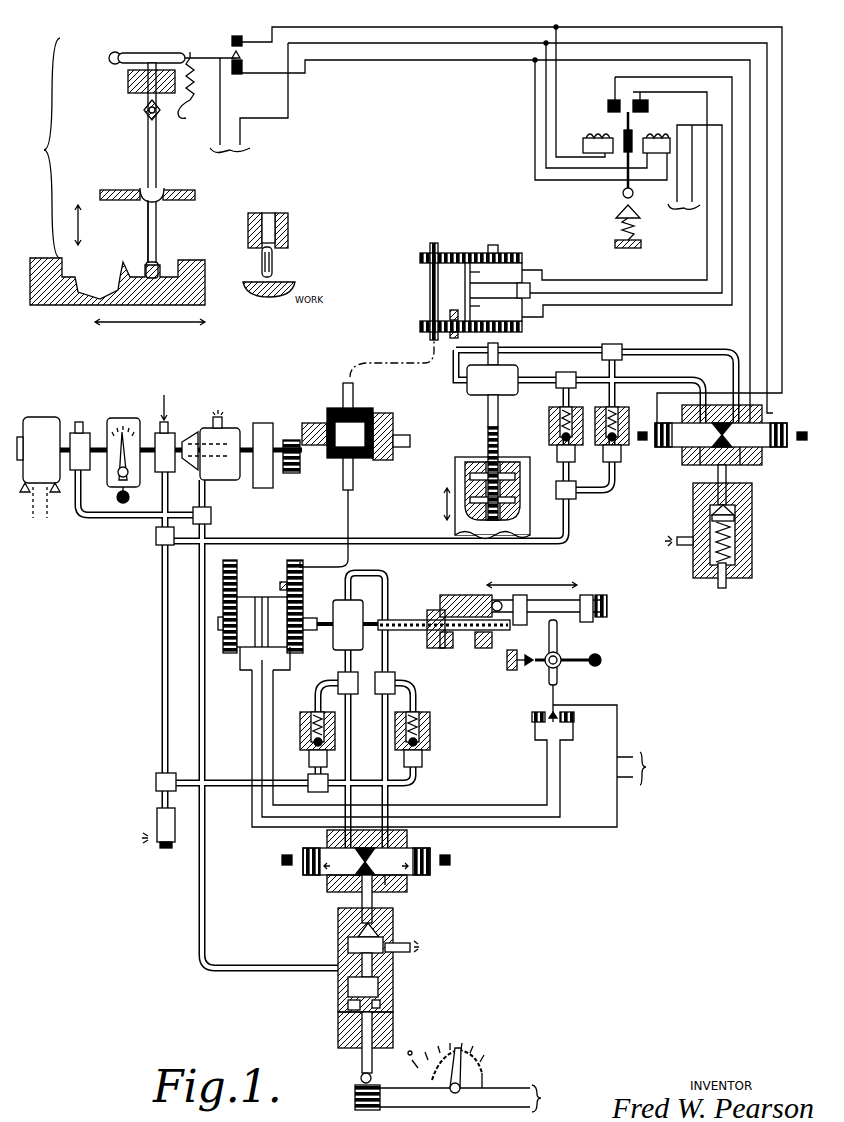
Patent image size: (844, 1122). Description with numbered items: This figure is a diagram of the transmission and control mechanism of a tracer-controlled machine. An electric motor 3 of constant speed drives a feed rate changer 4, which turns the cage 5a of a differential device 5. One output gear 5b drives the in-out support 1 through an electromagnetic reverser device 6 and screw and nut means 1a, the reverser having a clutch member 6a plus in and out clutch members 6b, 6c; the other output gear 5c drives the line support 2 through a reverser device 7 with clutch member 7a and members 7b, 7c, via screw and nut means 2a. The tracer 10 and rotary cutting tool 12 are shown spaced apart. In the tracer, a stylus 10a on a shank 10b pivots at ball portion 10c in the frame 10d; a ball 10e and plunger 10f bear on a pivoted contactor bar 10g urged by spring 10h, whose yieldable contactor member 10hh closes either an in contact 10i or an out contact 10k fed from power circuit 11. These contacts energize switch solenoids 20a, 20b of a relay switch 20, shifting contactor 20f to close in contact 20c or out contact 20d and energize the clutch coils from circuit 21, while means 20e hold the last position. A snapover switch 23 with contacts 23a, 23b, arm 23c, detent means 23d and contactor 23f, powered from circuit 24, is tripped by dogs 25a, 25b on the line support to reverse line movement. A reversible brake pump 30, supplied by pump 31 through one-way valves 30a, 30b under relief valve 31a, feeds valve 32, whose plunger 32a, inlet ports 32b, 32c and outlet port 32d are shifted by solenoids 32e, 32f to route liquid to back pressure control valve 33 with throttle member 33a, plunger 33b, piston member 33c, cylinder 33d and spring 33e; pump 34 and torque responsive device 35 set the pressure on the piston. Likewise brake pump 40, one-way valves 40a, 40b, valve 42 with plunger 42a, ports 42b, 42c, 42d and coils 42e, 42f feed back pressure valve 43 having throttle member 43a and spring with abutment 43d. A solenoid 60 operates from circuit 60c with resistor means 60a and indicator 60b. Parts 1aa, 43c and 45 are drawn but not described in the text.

The in-out support 1 is at (479, 476).
The screw and nut means 1a is at (488, 435).
The valve stem cap 1aa is at (492, 245).
The line support 2 is at (511, 607).
The screw and nut means 2a is at (420, 612).
The electric motor 3 is at (40, 418).
The feed rate changer 4 is at (125, 418).
The differential device 5 is at (356, 434).
The cage 5a is at (305, 422).
The output gear 5b is at (356, 403).
The output gear 5c is at (355, 460).
The electromagnetic reverser device 6 is at (475, 286).
The clutch member 6a is at (470, 292).
The in clutch member 6b is at (472, 272).
The out clutch member 6c is at (470, 306).
The electromagnetic reverser device 7 is at (254, 606).
The clutch member 7a is at (265, 600).
The clutch member 7b is at (247, 600).
The clutch member 7c is at (270, 600).
The tracer 10 is at (149, 179).
The stylus 10a is at (158, 262).
The shank 10b is at (160, 238).
The ball form pivot portion 10c is at (160, 200).
The tracer frame 10d is at (128, 80).
The ball 10e is at (146, 113).
The plunger 10f is at (146, 100).
The pivoted contactor bar 10g is at (153, 53).
The spring 10h is at (192, 97).
The yieldable contactor member 10hh is at (192, 55).
The in contact 10i is at (243, 68).
The out contact 10k is at (243, 42).
The power circuit 11 is at (230, 164).
The rotary cutting tool 12 is at (276, 275).
The relay switch 20 is at (617, 161).
The switch solenoid 20a is at (645, 140).
The switch solenoid 20b is at (586, 140).
The in contact 20c is at (640, 100).
The out contact 20d is at (612, 100).
The position maintaining means 20e is at (622, 203).
The contactor 20f is at (628, 120).
The circuit 21 is at (684, 218).
The snapover switch 23 is at (562, 686).
The contact 23a is at (538, 724).
The contact 23b is at (568, 724).
The switch arm 23c is at (560, 640).
The detent means 23d is at (540, 670).
The contactor 23f is at (550, 700).
The circuit 24 is at (643, 768).
The dog 25a is at (520, 625).
The dog 25b is at (595, 620).
The hydraulic brake pump 30 is at (340, 600).
The one-way valve 30a is at (308, 715).
The one-way valve 30b is at (428, 715).
The pump 31 is at (172, 430).
The relief valve 31a is at (155, 812).
The valve 32 is at (368, 876).
The shiftable plunger 32a is at (430, 875).
The inlet port 32b is at (350, 885).
The inlet port 32c is at (385, 880).
The outlet port 32d is at (362, 890).
The valve shifting solenoid 32e is at (310, 848).
The valve shifting solenoid 32f is at (428, 852).
The back pressure control valve 33 is at (376, 990).
The throttle member 33a is at (358, 928).
The plunger 33b is at (348, 947).
The piston member 33c is at (348, 988).
The cylinder 33d is at (390, 975).
The spring 33e is at (348, 1003).
The positive delivery pump 34 is at (85, 432).
The torque responsive device 35 is at (225, 425).
The hydraulic brake pump 40 is at (467, 385).
The one-way valve 40a is at (566, 400).
The one-way valve 40b is at (608, 407).
The valve 42 is at (719, 446).
The plunger 42a is at (786, 447).
The inlet port 42b is at (700, 462).
The inlet port 42c is at (740, 465).
The outlet port 42d is at (716, 470).
The solenoid coil 42e is at (660, 420).
The solenoid coil 42f is at (778, 420).
The back pressure valve 43 is at (715, 545).
The throttle member 43a is at (715, 508).
The port 43c is at (700, 560).
The spring with adjustable abutment 43d is at (728, 585).
The disc 45 is at (265, 422).
The solenoid 60 is at (346, 1088).
The resistor means 60a is at (483, 1051).
The indicator means 60b is at (450, 1084).
The circuit 60c is at (552, 1098).